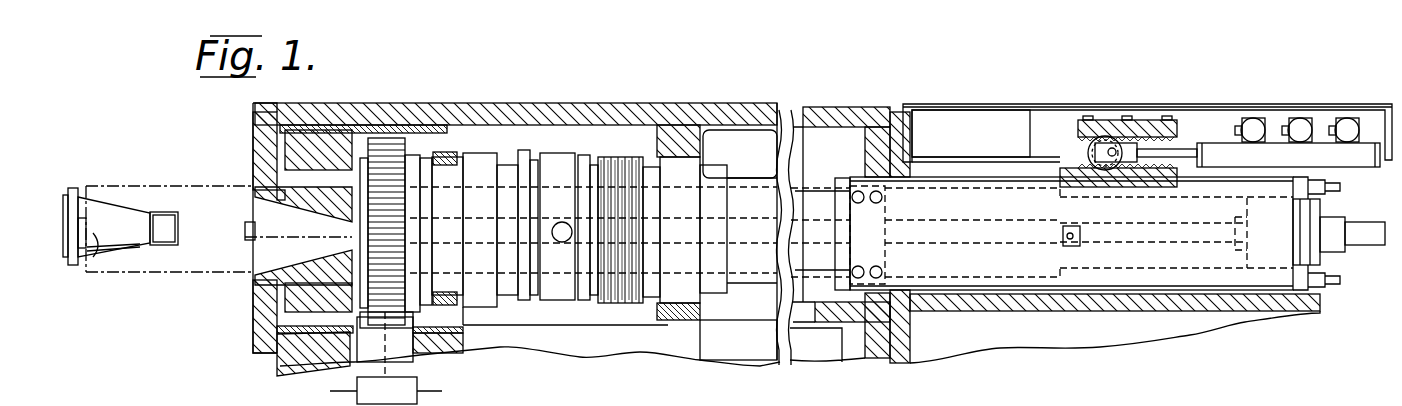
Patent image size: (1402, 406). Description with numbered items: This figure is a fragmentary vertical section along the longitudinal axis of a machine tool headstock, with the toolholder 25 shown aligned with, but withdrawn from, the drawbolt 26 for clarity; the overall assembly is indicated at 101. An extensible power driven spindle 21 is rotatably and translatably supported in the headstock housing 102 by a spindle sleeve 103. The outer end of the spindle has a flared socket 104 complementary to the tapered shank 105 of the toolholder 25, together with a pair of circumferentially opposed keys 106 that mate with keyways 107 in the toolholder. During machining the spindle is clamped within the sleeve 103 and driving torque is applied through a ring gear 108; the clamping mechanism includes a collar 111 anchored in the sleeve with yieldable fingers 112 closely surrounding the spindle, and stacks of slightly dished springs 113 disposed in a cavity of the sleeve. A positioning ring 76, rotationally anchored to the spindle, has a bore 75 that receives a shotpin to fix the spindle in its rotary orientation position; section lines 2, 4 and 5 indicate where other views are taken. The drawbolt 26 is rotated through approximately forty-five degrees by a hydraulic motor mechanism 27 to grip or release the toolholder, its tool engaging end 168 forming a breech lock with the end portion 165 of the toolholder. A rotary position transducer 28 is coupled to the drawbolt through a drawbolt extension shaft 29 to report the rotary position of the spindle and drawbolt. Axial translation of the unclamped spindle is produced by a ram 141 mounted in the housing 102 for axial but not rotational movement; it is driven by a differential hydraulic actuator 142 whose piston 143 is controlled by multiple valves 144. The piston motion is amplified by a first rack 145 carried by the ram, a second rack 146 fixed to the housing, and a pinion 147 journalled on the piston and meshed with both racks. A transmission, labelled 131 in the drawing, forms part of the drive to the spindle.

The spindle head housing 101 is at (695, 102).
The headstock housing 102 is at (532, 103).
The spindle sleeve 103 is at (253, 160).
The flared socket 104 is at (253, 210).
The tapered shank 105 is at (93, 200).
The keys 106 is at (246, 232).
The keyways 107 is at (93, 257).
The ring gear 108 is at (395, 135).
The end portion of the toolholder 165 is at (178, 235).
The tool engaging end of the drawbolt 168 is at (255, 285).
The spindle 21 is at (188, 274).
The toolholder 25 is at (70, 181).
The drawbolt 26 is at (800, 195).
The hydraulic motor mechanism 27 is at (1020, 283).
The rotary position transducer 28 is at (1340, 253).
The drawbolt extension shaft 29 is at (1197, 242).
The section line 2- 2 is at (300, 252).
The section line 4- 4 is at (560, 332).
The section line 5- 5 is at (325, 258).
The bore 75 is at (565, 235).
The positioning ring 76 is at (540, 305).
The ram 141 is at (1148, 282).
The differential hydraulic actuator 142 is at (1242, 112).
The piston 143 is at (1185, 148).
The valves 144 is at (1347, 112).
The first rack 145 is at (1058, 172).
The second rack 146 is at (1108, 118).
The pinion 147 is at (1095, 138).
The transmission 131 is at (540, 405).
The dished springs 113 is at (595, 405).
The yieldable fingers 112 is at (652, 405).
The collar 111 is at (820, 405).